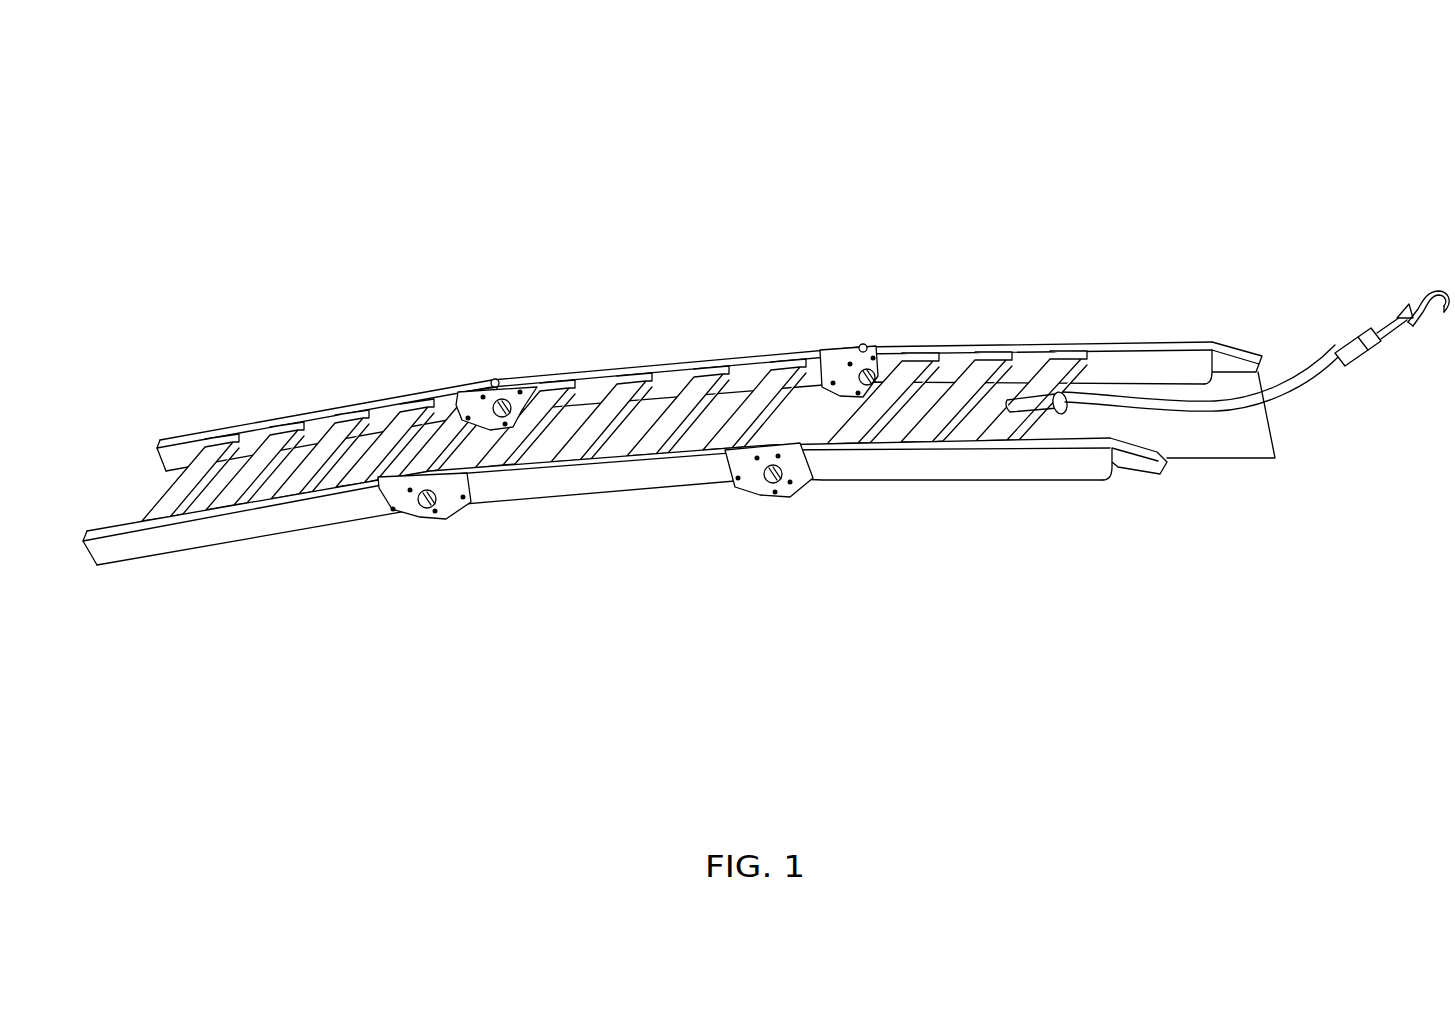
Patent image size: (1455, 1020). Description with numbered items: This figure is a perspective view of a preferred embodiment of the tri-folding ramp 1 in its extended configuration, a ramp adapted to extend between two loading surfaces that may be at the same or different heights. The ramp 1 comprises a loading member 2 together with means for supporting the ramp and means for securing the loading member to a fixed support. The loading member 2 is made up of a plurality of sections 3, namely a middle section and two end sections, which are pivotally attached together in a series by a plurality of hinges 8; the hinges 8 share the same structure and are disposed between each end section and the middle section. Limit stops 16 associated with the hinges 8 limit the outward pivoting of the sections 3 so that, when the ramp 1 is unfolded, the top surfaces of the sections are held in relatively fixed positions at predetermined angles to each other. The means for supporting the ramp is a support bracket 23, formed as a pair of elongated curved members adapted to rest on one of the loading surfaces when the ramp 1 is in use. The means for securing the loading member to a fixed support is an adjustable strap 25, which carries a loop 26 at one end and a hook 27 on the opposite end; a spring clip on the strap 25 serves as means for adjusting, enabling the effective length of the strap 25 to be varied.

The tri-folding ramp 1 is at (624, 256).
The loading member 2 is at (319, 549).
The sections 3 is at (190, 553).
The hinges 8 is at (471, 366).
The limit stops 16 is at (495, 380).
The support bracket 23 is at (1236, 433).
The adjustable strap 25 is at (1317, 329).
The loop 26 is at (1055, 415).
The hook 27 is at (1439, 290).